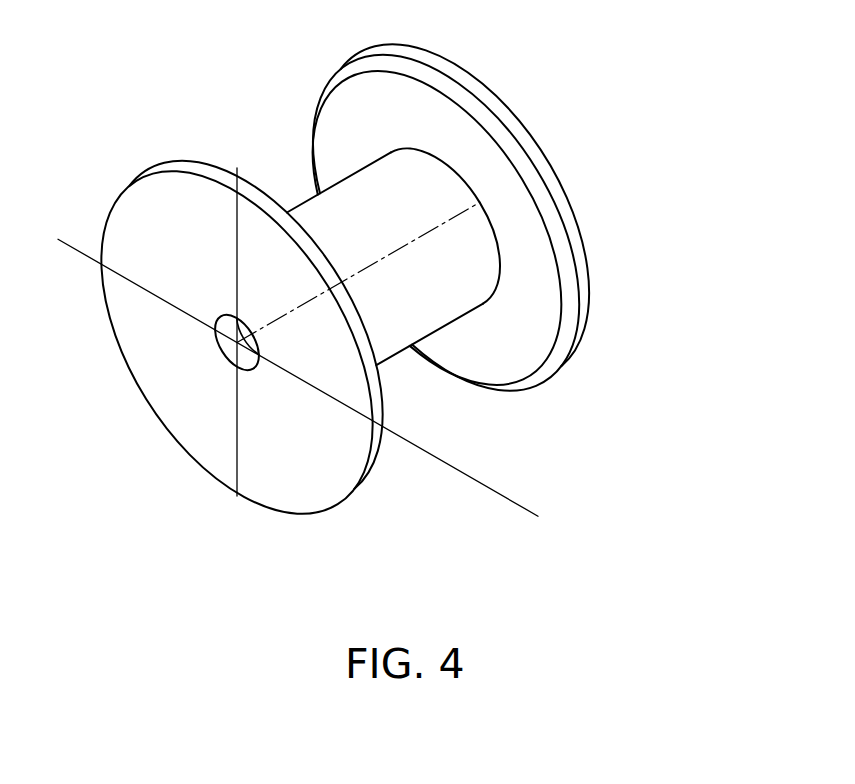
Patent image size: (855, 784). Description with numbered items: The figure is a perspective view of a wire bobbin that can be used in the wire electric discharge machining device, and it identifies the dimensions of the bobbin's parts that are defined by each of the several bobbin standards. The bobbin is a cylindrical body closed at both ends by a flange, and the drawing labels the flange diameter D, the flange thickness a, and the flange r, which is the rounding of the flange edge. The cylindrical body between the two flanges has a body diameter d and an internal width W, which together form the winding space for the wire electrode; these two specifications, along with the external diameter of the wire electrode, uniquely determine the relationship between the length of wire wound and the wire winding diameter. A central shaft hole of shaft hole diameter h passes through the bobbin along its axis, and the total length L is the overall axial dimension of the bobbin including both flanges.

The flange r is at (278, 154).
The flange diameter D is at (237, 190).
The shaft hole diameter h is at (259, 356).
The body diameter d is at (391, 152).
The flange thickness a is at (518, 492).
The internal width W is at (727, 331).
The total length L is at (752, 383).